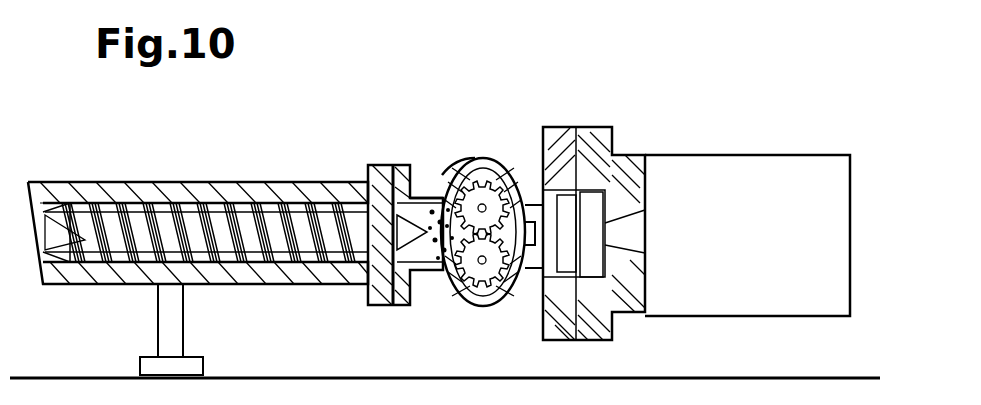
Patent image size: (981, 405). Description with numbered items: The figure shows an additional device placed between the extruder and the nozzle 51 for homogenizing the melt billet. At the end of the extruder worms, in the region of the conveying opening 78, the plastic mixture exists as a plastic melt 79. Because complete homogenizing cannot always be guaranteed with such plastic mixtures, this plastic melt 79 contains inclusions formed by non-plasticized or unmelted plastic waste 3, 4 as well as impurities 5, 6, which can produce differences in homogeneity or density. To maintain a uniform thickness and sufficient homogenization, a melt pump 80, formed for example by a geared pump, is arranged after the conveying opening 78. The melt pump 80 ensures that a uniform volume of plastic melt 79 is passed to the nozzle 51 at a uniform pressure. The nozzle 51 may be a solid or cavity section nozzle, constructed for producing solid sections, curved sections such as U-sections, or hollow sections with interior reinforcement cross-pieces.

The non-plasticized plastic waste 3 is at (381, 302).
The non-plasticized plastic waste 4 is at (403, 283).
The impurities 5 is at (436, 272).
The impurities 6 is at (462, 287).
The conveying opening 78 is at (421, 197).
The plastic melt 79 is at (444, 172).
The melt pump 80 is at (489, 203).
The nozzle 51 is at (674, 137).